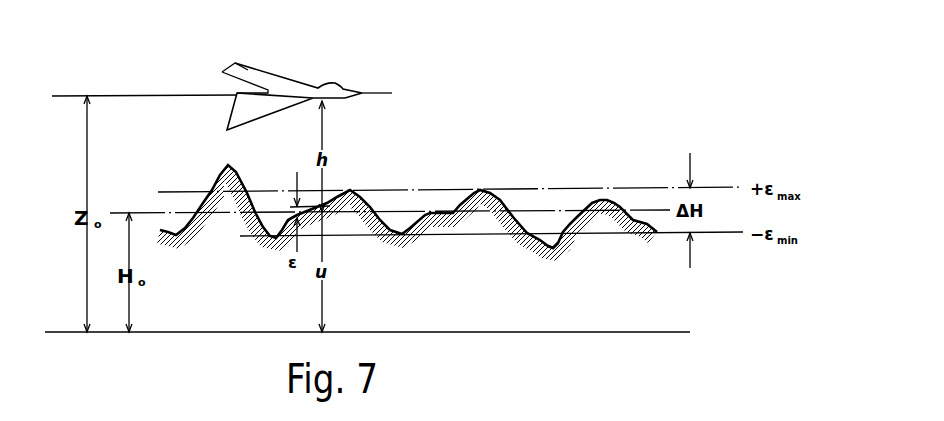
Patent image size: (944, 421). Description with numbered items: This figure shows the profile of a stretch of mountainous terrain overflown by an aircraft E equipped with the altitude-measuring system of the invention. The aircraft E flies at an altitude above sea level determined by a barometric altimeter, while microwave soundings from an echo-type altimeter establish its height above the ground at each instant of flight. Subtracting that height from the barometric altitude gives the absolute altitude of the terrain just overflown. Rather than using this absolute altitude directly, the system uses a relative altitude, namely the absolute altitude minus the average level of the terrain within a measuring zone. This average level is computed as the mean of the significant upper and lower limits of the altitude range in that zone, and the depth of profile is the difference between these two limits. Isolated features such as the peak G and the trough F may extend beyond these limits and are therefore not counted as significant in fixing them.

The aircraft E is at (277, 79).
The isolated peak G is at (224, 163).
The isolated trough F is at (553, 250).